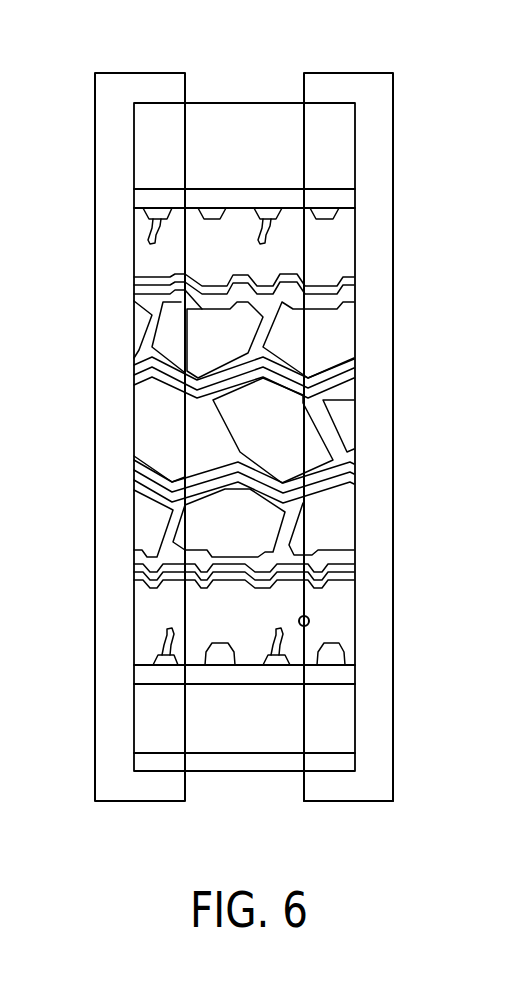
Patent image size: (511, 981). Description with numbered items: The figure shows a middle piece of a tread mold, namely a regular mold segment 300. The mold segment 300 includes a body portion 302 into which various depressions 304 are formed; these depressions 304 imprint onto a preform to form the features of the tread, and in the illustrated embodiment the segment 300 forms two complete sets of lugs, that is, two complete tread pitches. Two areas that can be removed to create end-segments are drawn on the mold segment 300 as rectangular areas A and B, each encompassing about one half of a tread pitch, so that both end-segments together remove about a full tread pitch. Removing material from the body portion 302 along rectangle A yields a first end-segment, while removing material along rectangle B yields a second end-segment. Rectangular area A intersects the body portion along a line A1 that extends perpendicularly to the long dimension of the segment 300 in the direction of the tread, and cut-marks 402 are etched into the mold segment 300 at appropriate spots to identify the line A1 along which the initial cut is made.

The mold segment 300 is at (260, 430).
The body portion 302 is at (355, 153).
The depressions 304 is at (335, 329).
The cut-marks 402 is at (331, 624).
The rectangular area A is at (393, 388).
The rectangular area B is at (95, 328).
The line A1 is at (293, 797).